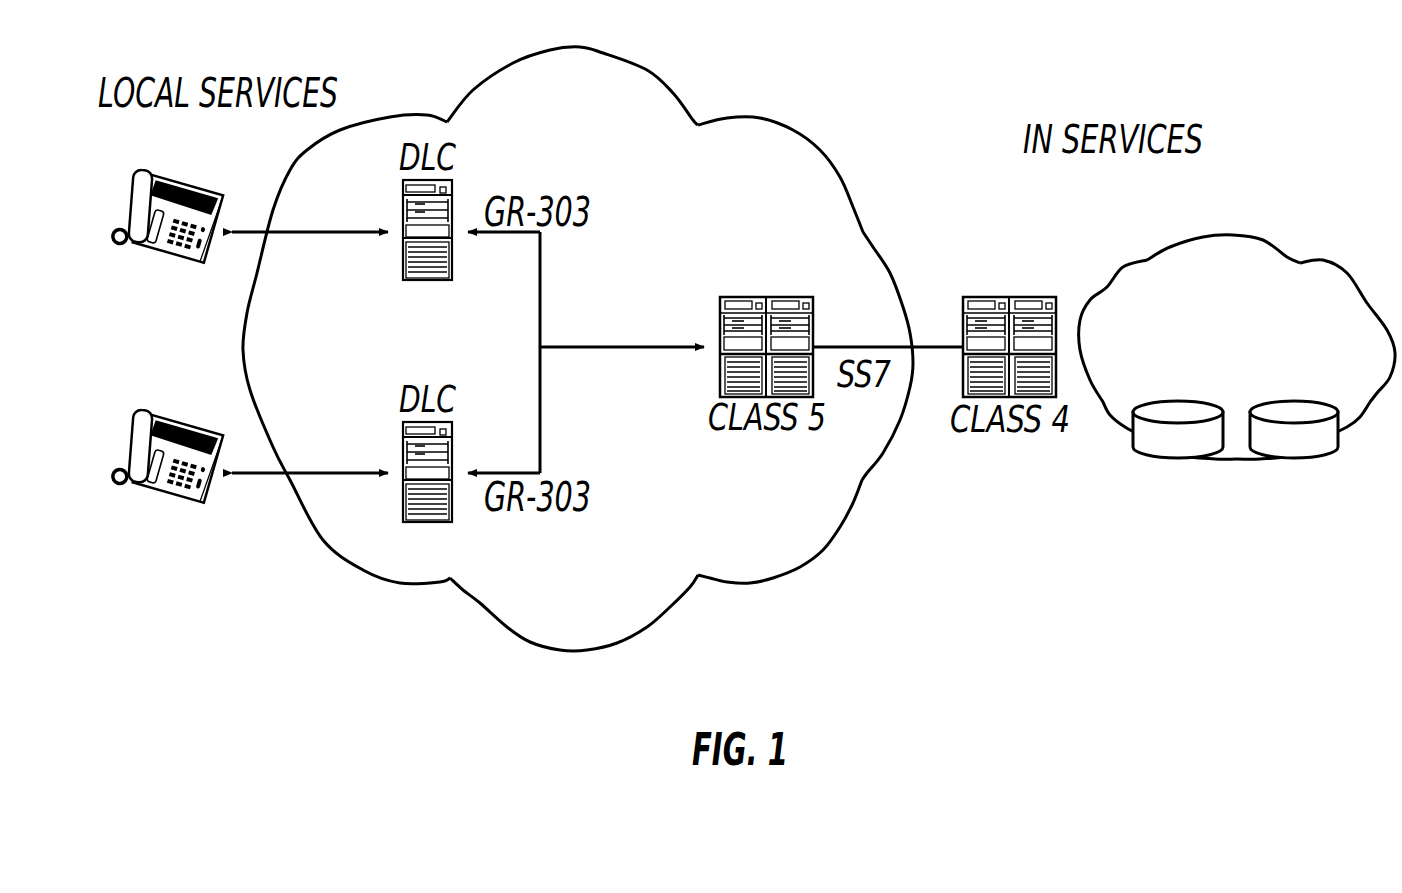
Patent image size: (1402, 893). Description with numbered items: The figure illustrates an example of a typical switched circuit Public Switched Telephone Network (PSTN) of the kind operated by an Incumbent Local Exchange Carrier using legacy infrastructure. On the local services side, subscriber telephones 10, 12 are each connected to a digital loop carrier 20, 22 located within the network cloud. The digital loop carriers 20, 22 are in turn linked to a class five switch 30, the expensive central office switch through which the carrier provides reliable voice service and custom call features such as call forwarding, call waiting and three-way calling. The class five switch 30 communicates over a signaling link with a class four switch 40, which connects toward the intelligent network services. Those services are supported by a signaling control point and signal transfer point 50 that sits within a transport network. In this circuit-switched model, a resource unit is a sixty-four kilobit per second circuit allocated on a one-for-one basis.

The telephone (local services subscriber) 10 is at (150, 174).
The telephone (local services subscriber) 12 is at (150, 414).
The digital loop carrier (DLC) 20 is at (403, 258).
The digital loop carrier (DLC) 22 is at (403, 448).
The Class 5 switch 30 is at (733, 297).
The Class 4 switch 40 is at (971, 297).
The SCP/STP (signaling control point / signal transfer point) 50 is at (1237, 515).